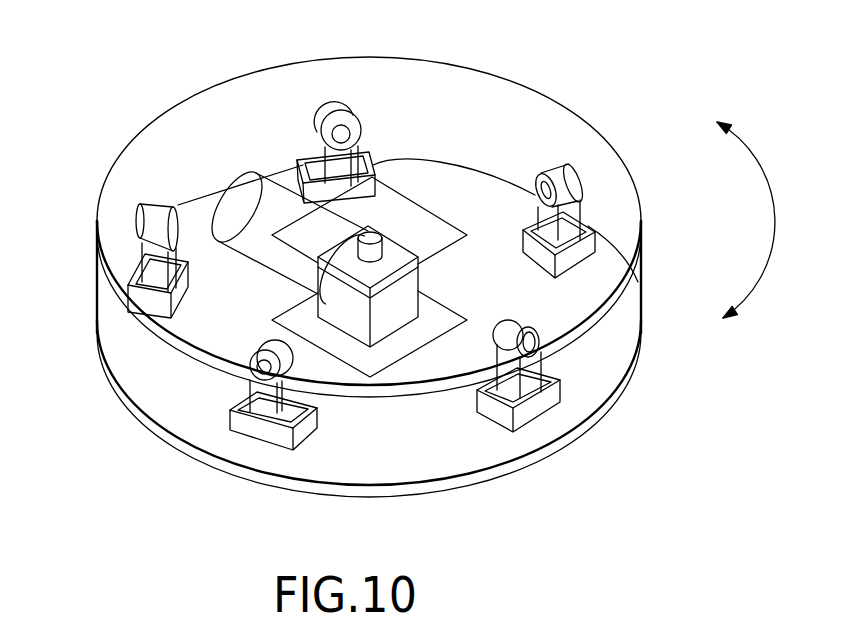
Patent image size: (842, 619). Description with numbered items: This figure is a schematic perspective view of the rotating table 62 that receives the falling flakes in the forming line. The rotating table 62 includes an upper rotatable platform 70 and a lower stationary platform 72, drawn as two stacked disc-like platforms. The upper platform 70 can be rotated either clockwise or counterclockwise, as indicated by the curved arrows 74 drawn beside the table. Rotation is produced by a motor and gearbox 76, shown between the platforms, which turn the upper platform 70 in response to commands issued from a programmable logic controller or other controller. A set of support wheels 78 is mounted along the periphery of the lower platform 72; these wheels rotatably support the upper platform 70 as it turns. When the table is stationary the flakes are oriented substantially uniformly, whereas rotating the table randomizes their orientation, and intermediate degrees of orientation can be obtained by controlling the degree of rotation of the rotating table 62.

The rotating table 62 is at (123, 398).
The upper rotatable platform 70 is at (183, 150).
The lower stationary platform 72 is at (122, 333).
The arrows 74 is at (777, 219).
The motor and gearbox 76 is at (358, 312).
The support wheels 78 is at (335, 110).